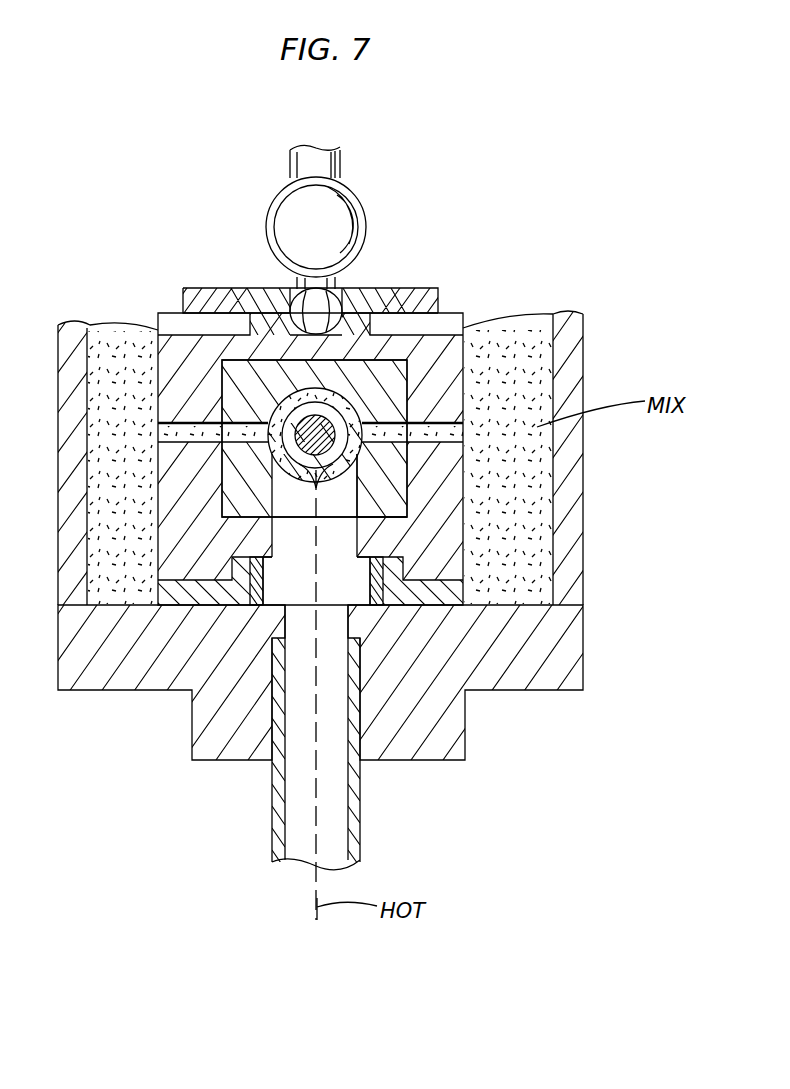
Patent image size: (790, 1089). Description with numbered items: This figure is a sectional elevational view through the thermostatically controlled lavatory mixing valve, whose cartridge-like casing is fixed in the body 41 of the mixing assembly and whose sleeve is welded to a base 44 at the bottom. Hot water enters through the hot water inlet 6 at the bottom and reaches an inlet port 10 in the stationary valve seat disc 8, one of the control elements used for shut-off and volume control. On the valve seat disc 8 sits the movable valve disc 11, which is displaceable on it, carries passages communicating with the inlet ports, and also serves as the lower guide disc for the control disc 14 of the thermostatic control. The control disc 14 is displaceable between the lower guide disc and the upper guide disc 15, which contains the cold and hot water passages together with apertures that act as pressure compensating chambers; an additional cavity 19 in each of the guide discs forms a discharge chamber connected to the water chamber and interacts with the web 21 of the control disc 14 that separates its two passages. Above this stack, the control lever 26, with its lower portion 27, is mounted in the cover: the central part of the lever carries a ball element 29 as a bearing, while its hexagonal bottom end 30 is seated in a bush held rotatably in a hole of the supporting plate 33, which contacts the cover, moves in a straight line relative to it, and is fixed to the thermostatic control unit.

The hot water inlet 6 is at (300, 830).
The valve seat disc 8 is at (402, 500).
The inlet port 10 is at (290, 538).
The movable valve disc 11 is at (387, 397).
The control disc 14 is at (312, 443).
The upper guide disc 15 is at (314, 438).
The cavity 19 is at (278, 395).
The web 21 is at (337, 455).
The control lever 26 is at (340, 162).
The lower portion 27 is at (447, 525).
The ball element 29 is at (355, 226).
The bottom end 30 is at (343, 303).
The supporting plate 33 is at (443, 323).
The body 41 is at (78, 330).
The base 44 is at (432, 634).